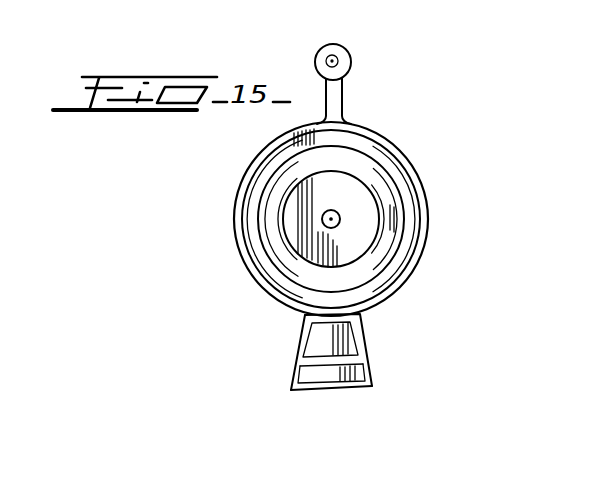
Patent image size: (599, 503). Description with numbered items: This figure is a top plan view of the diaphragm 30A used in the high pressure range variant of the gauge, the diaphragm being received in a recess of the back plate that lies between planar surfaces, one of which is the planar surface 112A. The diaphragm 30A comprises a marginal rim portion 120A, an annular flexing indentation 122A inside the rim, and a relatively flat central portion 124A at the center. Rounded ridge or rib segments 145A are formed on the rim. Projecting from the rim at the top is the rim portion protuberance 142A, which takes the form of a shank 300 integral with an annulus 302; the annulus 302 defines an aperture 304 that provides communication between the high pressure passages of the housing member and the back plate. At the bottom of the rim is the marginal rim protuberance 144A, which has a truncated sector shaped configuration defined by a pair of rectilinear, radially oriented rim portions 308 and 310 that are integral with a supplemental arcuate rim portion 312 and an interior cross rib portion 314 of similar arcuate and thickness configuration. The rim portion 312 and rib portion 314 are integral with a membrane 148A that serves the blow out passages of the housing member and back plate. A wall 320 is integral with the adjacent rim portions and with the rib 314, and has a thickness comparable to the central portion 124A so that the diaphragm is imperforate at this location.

The diaphragm 30A is at (353, 201).
The planar surface 112A is at (393, 215).
The marginal rim portion 120A is at (414, 266).
The flexing indentation 122A is at (387, 245).
The central portion 124A is at (360, 202).
The rim portion protuberance 142A is at (345, 62).
The marginal rim protuberance 144A is at (324, 384).
The rounded ridge or rib segments 145A is at (243, 184).
The membrane 148A is at (332, 372).
The shank 300 is at (332, 106).
The annulus 302 is at (315, 58).
The aperture 304 is at (331, 61).
The rectilinear radially oriented rim portion 308 is at (295, 347).
The rectilinear radially oriented rim portion 310 is at (362, 352).
The supplemental arcuate rim portion 312 is at (339, 390).
The interior cross rib portion 314 is at (333, 362).
The wall 320 is at (335, 333).